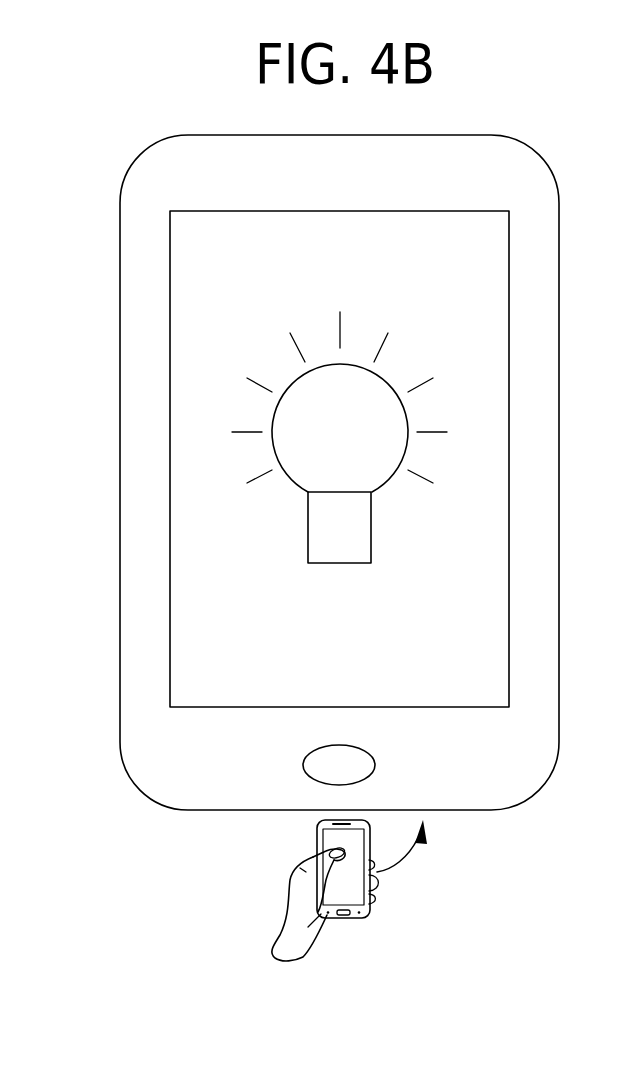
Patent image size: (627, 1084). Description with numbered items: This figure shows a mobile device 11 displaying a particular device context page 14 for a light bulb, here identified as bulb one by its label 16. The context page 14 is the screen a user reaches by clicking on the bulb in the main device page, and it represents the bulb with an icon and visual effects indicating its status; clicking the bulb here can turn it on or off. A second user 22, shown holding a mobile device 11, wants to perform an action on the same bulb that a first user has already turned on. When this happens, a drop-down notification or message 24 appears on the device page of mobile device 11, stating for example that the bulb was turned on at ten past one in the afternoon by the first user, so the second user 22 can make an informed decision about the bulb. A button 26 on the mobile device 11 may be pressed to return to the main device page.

The mobile device 11 is at (559, 288).
The device context page 14 is at (457, 211).
The label 16 is at (410, 249).
The second user 22 is at (290, 893).
The message 24 is at (438, 616).
The button 26 is at (375, 761).